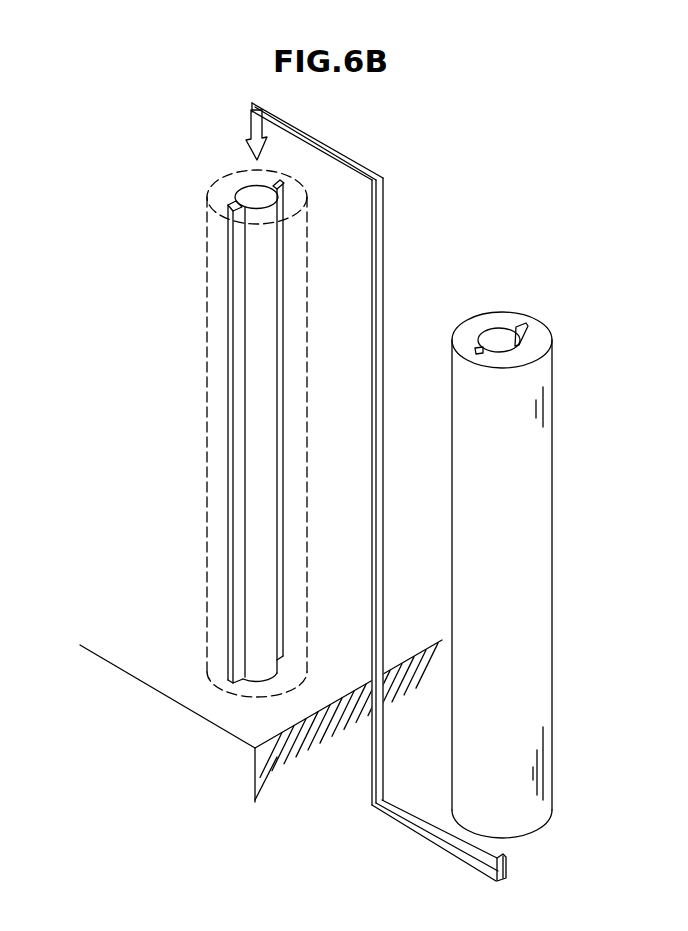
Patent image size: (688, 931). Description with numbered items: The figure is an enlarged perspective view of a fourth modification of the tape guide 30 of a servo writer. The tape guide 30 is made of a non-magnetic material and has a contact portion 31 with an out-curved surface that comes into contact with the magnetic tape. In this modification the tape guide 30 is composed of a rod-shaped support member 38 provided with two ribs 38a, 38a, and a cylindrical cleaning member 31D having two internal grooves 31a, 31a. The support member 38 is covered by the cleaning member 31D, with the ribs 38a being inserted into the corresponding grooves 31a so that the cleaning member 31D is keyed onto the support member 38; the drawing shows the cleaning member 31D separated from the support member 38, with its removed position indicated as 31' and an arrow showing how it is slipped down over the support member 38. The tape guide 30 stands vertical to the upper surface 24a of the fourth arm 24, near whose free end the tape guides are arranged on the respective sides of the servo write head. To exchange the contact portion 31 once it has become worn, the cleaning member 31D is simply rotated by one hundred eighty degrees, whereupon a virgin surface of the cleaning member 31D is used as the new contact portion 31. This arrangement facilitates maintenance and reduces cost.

The tape guide 30 is at (434, 187).
The contact portion 31 is at (536, 575).
The cleaning member (before mounting) 31' is at (485, 303).
The internal groove 31a is at (479, 333).
The cleaning member 31D is at (579, 298).
The support member 38 is at (254, 512).
The rib 38a is at (285, 328).
The fourth arm 24 is at (287, 770).
The upper surface 24a is at (258, 722).